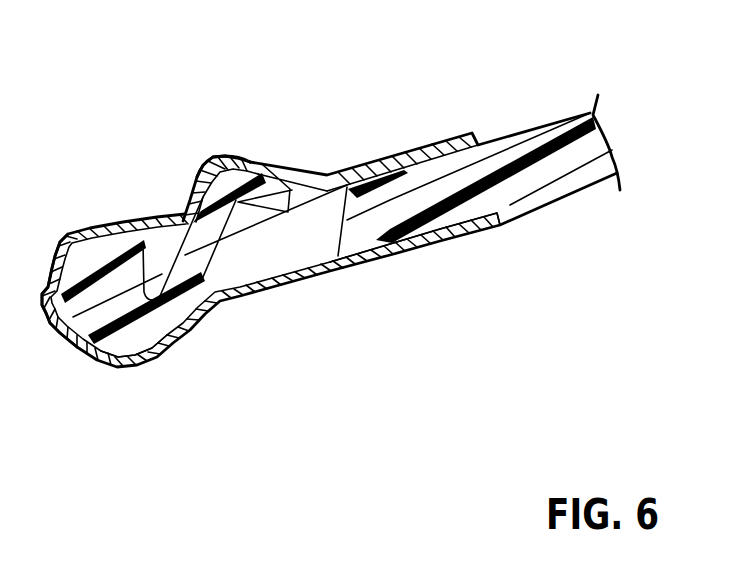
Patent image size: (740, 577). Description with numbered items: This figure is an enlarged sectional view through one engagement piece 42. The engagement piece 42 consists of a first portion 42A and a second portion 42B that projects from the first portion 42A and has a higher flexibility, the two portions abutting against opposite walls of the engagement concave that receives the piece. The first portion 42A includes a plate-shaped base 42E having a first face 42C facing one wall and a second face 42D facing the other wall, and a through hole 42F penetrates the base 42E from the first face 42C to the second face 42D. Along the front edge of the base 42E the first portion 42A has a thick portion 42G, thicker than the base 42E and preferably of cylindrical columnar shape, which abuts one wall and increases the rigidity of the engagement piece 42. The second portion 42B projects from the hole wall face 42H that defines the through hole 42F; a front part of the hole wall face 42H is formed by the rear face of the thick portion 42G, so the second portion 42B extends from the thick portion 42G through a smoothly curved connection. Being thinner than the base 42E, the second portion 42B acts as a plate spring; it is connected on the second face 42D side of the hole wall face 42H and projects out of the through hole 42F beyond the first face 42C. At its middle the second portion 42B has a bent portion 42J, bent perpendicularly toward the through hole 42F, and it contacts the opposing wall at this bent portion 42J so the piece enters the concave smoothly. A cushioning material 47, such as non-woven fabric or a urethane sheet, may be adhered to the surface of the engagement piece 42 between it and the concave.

The engagement piece 42 is at (523, 90).
The first portion 42A is at (542, 208).
The second portion 42B is at (241, 165).
The first face 42C is at (373, 175).
The second face 42D is at (357, 248).
The base 42E is at (478, 206).
The through hole 42F is at (345, 226).
The thick portion 42G is at (93, 325).
The hole wall face 42H is at (148, 267).
The bent portion 42J is at (203, 167).
The cushioning material 47 is at (146, 360).